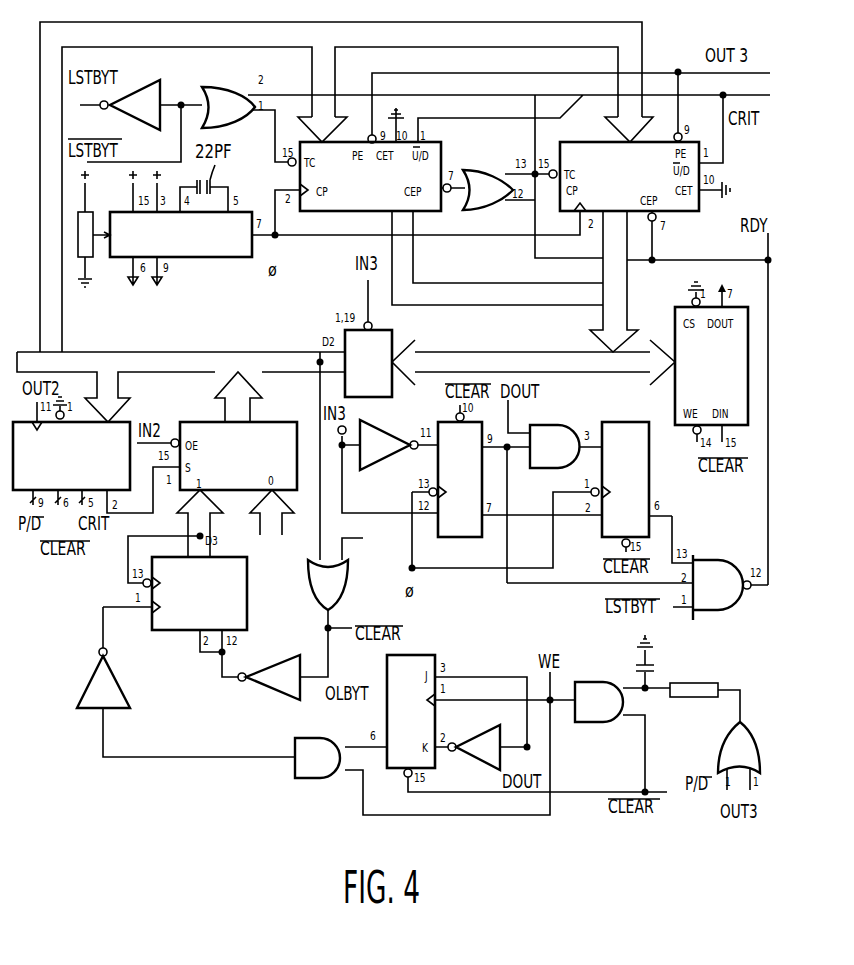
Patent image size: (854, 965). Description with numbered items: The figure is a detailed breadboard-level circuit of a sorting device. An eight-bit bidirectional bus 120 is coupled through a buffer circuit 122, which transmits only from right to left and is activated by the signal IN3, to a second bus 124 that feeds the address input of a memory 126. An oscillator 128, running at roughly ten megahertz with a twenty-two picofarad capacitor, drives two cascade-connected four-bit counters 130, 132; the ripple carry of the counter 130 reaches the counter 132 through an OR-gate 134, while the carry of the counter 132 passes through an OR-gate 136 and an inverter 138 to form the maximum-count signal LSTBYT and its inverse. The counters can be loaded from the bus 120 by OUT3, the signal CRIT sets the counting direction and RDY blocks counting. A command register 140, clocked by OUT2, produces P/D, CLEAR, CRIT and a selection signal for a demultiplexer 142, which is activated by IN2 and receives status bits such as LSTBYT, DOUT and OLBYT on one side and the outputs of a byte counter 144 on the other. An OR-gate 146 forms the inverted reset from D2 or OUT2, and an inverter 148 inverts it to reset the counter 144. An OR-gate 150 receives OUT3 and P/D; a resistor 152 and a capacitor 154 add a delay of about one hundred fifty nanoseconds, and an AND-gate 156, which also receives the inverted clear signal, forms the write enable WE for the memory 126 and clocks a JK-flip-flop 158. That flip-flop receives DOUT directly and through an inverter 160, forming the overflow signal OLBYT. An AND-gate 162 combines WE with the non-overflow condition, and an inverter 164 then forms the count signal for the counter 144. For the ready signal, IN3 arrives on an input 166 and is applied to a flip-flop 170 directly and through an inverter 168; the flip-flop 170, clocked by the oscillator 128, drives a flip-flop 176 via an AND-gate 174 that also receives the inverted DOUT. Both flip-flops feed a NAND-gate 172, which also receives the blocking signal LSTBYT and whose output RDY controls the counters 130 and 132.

The bidirectional bus 120 is at (168, 351).
The buffer circuit 122 is at (383, 330).
The second bus 124 is at (500, 352).
The memory 126 is at (675, 333).
The oscillator 128 is at (205, 258).
The four-bit counter 130 is at (607, 134).
The four-bit counter 132 is at (441, 160).
The OR-gate 134 is at (500, 170).
The OR-gate 136 is at (218, 90).
The inverter 138 is at (140, 82).
The command register 140 is at (120, 416).
The demultiplexer 142 is at (281, 421).
The counter 144 is at (250, 602).
The OR-gate 146 is at (349, 580).
The inverter 148 is at (261, 698).
The OR-gate 150 is at (717, 750).
The resistor 152 is at (710, 698).
The capacitor 154 is at (656, 667).
The AND-gate 156 is at (599, 721).
The JK-flip-flop 158 is at (390, 768).
The inverter 160 is at (477, 735).
The AND-gate 162 is at (325, 780).
The inverter 164 is at (84, 690).
The input 166 is at (350, 425).
The inverter 168 is at (382, 474).
The JK-flipflop 170 is at (455, 538).
The NAND-gate 172 is at (716, 559).
The AND-gate 174 is at (548, 469).
The flipflop 176 is at (650, 455).